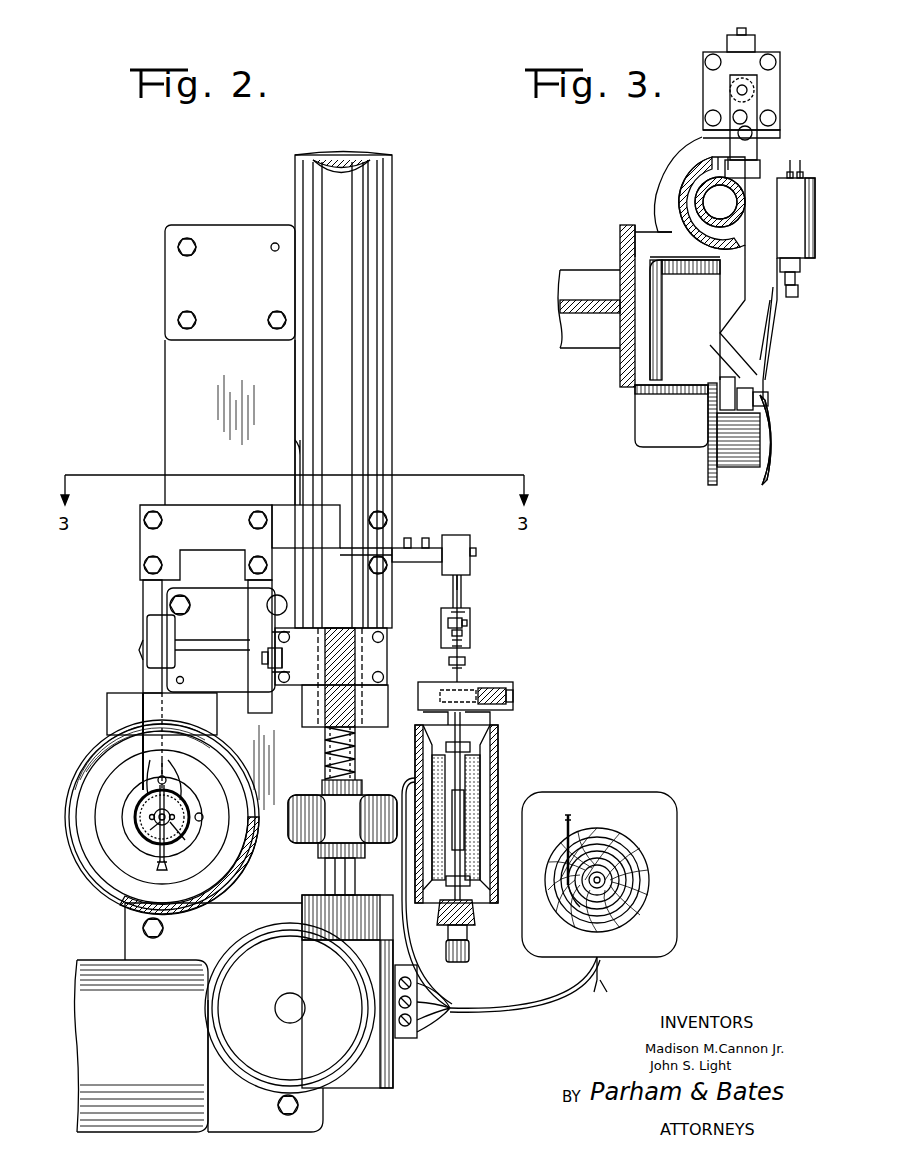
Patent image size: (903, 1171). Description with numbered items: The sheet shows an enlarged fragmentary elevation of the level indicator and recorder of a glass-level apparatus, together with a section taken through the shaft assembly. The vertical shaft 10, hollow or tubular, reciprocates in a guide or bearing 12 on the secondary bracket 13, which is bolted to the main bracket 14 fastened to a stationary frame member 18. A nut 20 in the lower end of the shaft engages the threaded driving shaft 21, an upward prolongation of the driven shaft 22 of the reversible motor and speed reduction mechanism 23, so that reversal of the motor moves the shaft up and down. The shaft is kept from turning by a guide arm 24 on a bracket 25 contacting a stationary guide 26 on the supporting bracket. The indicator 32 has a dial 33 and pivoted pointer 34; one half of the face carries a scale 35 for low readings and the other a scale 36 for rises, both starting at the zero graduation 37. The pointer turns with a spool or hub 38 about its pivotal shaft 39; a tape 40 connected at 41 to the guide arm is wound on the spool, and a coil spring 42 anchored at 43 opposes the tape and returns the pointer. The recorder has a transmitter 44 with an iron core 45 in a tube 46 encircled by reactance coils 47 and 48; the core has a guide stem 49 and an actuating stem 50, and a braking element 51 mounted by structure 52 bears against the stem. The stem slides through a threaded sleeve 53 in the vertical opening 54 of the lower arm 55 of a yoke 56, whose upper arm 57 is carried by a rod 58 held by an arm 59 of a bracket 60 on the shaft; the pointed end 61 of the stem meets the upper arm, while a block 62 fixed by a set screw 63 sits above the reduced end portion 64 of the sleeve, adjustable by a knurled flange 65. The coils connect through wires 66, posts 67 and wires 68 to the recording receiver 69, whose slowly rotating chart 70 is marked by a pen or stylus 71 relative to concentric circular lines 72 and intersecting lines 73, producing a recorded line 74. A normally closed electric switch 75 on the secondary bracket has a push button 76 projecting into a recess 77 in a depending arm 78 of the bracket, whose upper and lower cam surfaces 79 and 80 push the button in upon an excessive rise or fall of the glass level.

In FIG. 2, the vertical shaft 10 is at (365, 425).
In FIG. 3, the vertical shaft 10 is at (722, 180).
In FIG. 2, the guide or bearing 12 is at (378, 727).
In FIG. 2, the secondary bracket 13 is at (298, 490).
In FIG. 3, the secondary bracket 13 is at (702, 142).
In FIG. 3, the main bracket 14 is at (614, 338).
In FIG. 3, the stationary frame member 18 is at (788, 305).
In FIG. 2, the nut 20 is at (355, 735).
In FIG. 2, the threaded driving shaft 21 is at (355, 762).
In FIG. 2, the driven shaft 22 is at (355, 876).
In FIG. 2, the reversible motor and speed reduction mechanism 23 is at (372, 1058).
In FIG. 2, the guide arm 24 is at (143, 600).
In FIG. 3, the guide arm 24 is at (750, 388).
In FIG. 2, the bracket 25 is at (212, 510).
In FIG. 3, the bracket 25 is at (768, 352).
In FIG. 2, the stationary guide 26 is at (168, 627).
In FIG. 3, the stationary guide 26 is at (770, 398).
In FIG. 2, the indicator 32 is at (100, 903).
In FIG. 3, the indicator 32 is at (727, 475).
In FIG. 2, the dial 33 is at (151, 755).
In FIG. 2, the pointer 34 is at (185, 765).
In FIG. 2, the scale 35 is at (215, 785).
In FIG. 2, the scale 36 is at (98, 770).
In FIG. 2, the zero graduation 37 is at (165, 755).
In FIG. 2, the spool or hub 38 is at (185, 840).
In FIG. 2, the pivotal shaft 39 is at (140, 832).
In FIG. 2, the tape 40 is at (138, 716).
In FIG. 2, the tape connection 41 is at (140, 666).
In FIG. 2, the coil spring 42 is at (137, 800).
In FIG. 2, the spring connection 43 is at (198, 805).
In FIG. 2, the transmitter 44 is at (498, 735).
In FIG. 2, the iron core 45 is at (480, 780).
In FIG. 2, the tube 46 is at (470, 862).
In FIG. 2, the reactance coil 47 is at (482, 755).
In FIG. 2, the reactance coil 48 is at (478, 830).
In FIG. 2, the guide stem 49 is at (475, 884).
In FIG. 2, the actuating stem 50 is at (470, 688).
In FIG. 2, the braking element 51 is at (505, 690).
In FIG. 2, the braking element mounting structure 52 is at (518, 690).
In FIG. 3, the braking element mounting structure 52 is at (772, 52).
In FIG. 2, the threaded sleeve 53 is at (465, 668).
In FIG. 2, the vertical opening 54 is at (464, 641).
In FIG. 2, the lower arm 55 is at (465, 646).
In FIG. 2, the yoke 56 is at (441, 634).
In FIG. 2, the upper arm 57 is at (462, 600).
In FIG. 2, the vertical rod 58 is at (455, 582).
In FIG. 3, the vertical rod 58 is at (748, 88).
In FIG. 2, the arm 59 is at (447, 540).
In FIG. 3, the arm 59 is at (757, 98).
In FIG. 2, the bracket 60 is at (415, 562).
In FIG. 3, the bracket 60 is at (757, 155).
In FIG. 2, the pointed upper end 61 is at (448, 620).
In FIG. 2, the block 62 is at (462, 614).
In FIG. 2, the set screw 63 is at (468, 622).
In FIG. 2, the reduced upper end portion 64 is at (462, 633).
In FIG. 2, the knurled flange 65 is at (449, 661).
In FIG. 2, the wires 66 is at (448, 940).
In FIG. 2, the posts 67 is at (392, 985).
In FIG. 2, the wires 68 is at (435, 1017).
In FIG. 2, the recording receiver 69 is at (593, 785).
In FIG. 2, the chart 70 is at (600, 830).
In FIG. 2, the pen or stylus 71 is at (560, 850).
In FIG. 2, the concentric circular lines 72 is at (620, 845).
In FIG. 2, the intersecting lines 73 is at (626, 845).
In FIG. 2, the recorded line 74 is at (568, 905).
In FIG. 2, the electric switch 75 is at (300, 695).
In FIG. 3, the electric switch 75 is at (808, 210).
In FIG. 3, the push button control member 76 is at (798, 278).
In FIG. 2, the recess 77 is at (268, 655).
In FIG. 3, the recess 77 is at (802, 160).
In FIG. 2, the depending arm 78 is at (250, 607).
In FIG. 2, the upper cam surface 79 is at (268, 640).
In FIG. 2, the lower cam surface 80 is at (272, 672).